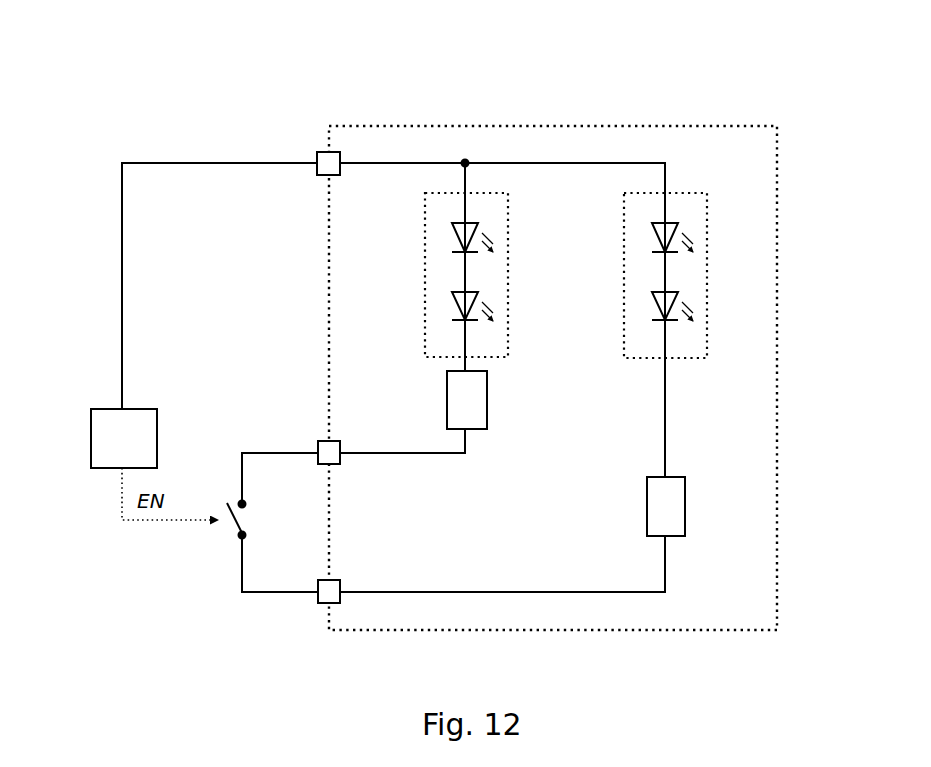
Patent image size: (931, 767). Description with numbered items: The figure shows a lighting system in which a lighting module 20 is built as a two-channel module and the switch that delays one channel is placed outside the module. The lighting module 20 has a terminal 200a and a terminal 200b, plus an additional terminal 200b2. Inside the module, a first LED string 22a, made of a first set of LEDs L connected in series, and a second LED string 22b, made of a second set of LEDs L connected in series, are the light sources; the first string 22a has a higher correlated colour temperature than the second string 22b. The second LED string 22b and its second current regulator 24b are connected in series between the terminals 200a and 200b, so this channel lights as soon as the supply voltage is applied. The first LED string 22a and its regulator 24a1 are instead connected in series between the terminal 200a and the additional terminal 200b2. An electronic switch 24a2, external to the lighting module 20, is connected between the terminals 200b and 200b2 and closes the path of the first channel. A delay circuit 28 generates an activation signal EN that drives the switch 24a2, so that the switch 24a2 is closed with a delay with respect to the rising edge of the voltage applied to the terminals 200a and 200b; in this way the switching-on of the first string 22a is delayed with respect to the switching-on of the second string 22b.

The lighting module 20 is at (650, 124).
The terminal 200a is at (319, 151).
The terminal 200b is at (322, 606).
The additional terminal 200b2 is at (322, 438).
The delay circuit 28 is at (106, 406).
The first LED string 22a is at (503, 373).
The second LED string 22b is at (680, 375).
The LED L is at (488, 213).
The regulator 24a1 is at (472, 423).
The electronic switch 24a2 is at (220, 538).
The second current regulator 24b is at (671, 528).